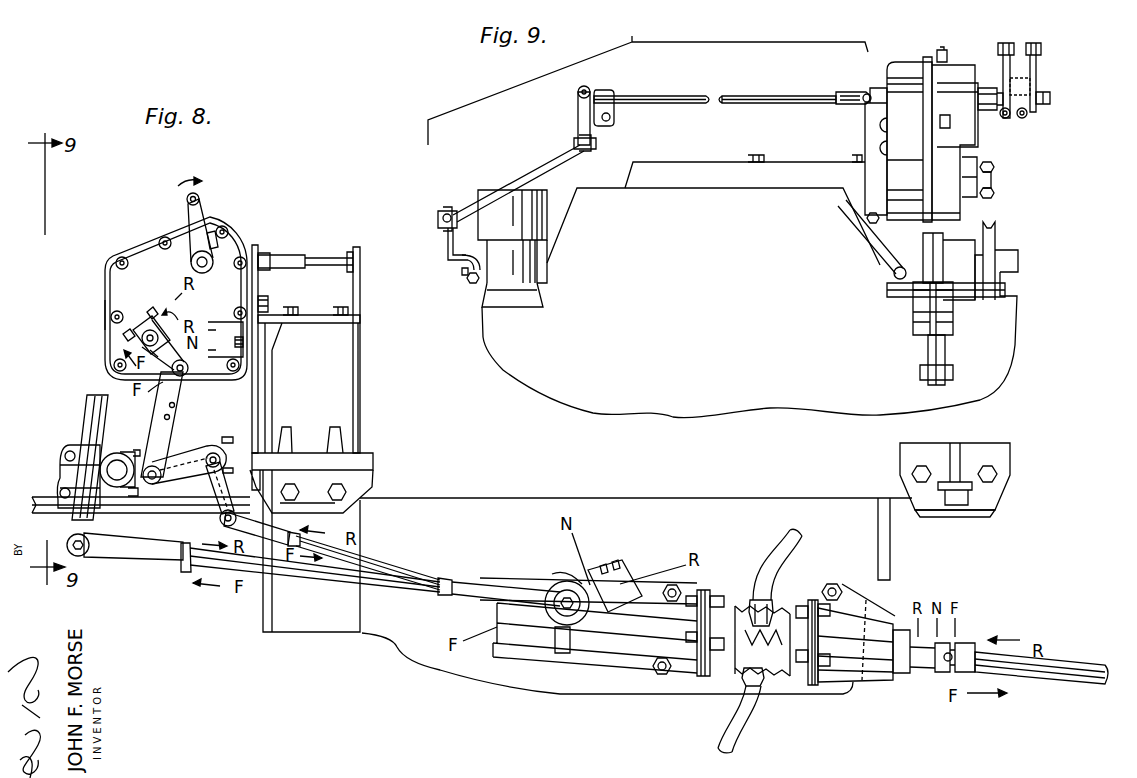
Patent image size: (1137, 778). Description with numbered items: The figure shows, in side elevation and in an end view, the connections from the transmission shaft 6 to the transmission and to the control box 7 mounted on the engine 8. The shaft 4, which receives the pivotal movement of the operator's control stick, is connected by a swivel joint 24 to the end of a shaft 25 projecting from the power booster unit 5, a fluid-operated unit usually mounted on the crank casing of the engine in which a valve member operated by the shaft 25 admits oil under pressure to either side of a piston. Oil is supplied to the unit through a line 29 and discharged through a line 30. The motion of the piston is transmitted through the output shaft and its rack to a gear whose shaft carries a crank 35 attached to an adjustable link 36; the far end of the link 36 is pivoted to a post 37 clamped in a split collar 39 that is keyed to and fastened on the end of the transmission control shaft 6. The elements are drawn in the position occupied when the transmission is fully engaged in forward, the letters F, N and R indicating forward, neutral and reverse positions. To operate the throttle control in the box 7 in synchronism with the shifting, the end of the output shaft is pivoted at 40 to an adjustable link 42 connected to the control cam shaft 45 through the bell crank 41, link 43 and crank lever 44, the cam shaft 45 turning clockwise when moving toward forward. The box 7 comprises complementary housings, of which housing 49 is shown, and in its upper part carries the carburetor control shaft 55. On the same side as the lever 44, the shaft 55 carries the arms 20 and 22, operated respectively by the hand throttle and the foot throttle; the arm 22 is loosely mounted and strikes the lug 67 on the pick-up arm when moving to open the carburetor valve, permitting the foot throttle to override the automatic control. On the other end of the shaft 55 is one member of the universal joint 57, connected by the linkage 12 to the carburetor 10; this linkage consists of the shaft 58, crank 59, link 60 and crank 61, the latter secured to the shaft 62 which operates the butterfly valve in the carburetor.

In FIG. 8, the shaft 4 is at (1069, 662).
In FIG. 8, the power booster unit 5 is at (838, 670).
In FIG. 8, the transmission shaft 6 is at (116, 466).
In FIG. 8, the control box 7 is at (128, 257).
In FIG. 9, the engine 8 is at (482, 338).
In FIG. 9, the carburetor 10 is at (543, 207).
In FIG. 9, the linkage 12 is at (648, 80).
In FIG. 9, the arm 20 is at (1004, 67).
In FIG. 8, the arm 22 is at (200, 202).
In FIG. 9, the arm 22 is at (1037, 66).
In FIG. 8, the swivel joint 24 is at (945, 674).
In FIG. 8, the shaft 25 is at (912, 670).
In FIG. 8, the line 29 is at (780, 568).
In FIG. 8, the line 30 is at (744, 738).
In FIG. 8, the crank 35 is at (600, 575).
In FIG. 8, the adjustable link 36 is at (316, 576).
In FIG. 9, the adjustable link 36 is at (887, 292).
In FIG. 8, the post 37 is at (88, 405).
In FIG. 9, the post 37 is at (920, 350).
In FIG. 8, the split collar 39 is at (68, 473).
In FIG. 9, the split collar 39 is at (912, 320).
In FIG. 8, the pivot 40 is at (104, 292).
In FIG. 8, the bell crank 41 is at (177, 462).
In FIG. 8, the adjustable link 42 is at (372, 565).
In FIG. 8, the link 43 is at (162, 414).
In FIG. 9, the link 43 is at (996, 234).
In FIG. 8, the crank lever 44 is at (136, 371).
In FIG. 9, the crank lever 44 is at (996, 187).
In FIG. 8, the control cam shaft 45 is at (140, 340).
In FIG. 9, the housing 49 is at (878, 236).
In FIG. 8, the carburetor control shaft 55 is at (192, 247).
In FIG. 9, the universal joint 57 is at (870, 92).
In FIG. 9, the shaft 58 is at (707, 95).
In FIG. 9, the crank 59 is at (578, 121).
In FIG. 9, the link 60 is at (533, 175).
In FIG. 9, the crank 61 is at (447, 248).
In FIG. 9, the shaft 62 is at (482, 288).
In FIG. 8, the lug 67 is at (236, 236).